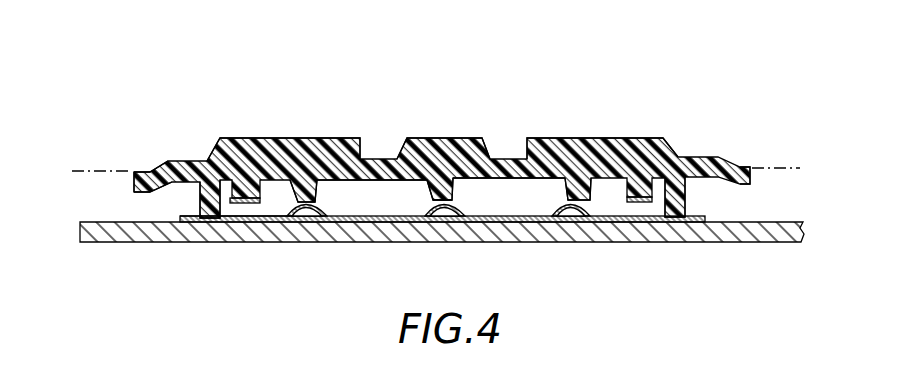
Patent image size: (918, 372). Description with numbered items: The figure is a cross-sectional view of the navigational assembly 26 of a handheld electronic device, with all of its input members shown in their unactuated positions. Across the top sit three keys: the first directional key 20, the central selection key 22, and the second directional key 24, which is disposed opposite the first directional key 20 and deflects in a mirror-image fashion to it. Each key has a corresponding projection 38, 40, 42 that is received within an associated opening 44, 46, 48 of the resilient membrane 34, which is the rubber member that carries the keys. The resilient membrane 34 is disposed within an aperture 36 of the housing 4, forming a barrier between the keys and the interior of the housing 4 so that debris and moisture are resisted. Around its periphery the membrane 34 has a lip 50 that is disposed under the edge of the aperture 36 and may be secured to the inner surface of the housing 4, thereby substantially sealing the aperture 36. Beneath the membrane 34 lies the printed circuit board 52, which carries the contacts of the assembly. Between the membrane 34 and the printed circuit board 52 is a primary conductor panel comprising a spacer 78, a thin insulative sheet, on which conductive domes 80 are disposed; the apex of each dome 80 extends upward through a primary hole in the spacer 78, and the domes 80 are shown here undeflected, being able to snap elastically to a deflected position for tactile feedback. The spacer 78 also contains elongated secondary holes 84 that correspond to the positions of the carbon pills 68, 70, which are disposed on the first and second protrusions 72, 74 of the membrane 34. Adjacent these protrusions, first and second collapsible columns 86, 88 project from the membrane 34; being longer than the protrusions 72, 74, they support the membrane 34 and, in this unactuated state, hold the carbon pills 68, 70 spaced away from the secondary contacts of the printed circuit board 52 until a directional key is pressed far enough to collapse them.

The housing 4 is at (82, 170).
The first directional key 20 is at (283, 138).
The central selection key 22 is at (422, 138).
The second directional key 24 is at (588, 138).
The navigational assembly 26 is at (366, 74).
The resilient membrane 34 is at (180, 161).
The aperture 36 is at (151, 172).
The projection 38 is at (318, 190).
The projection 40 is at (450, 190).
The projection 42 is at (566, 188).
The opening 44 is at (331, 160).
The opening 46 is at (455, 165).
The opening 48 is at (560, 162).
The lip 50 is at (135, 181).
The printed circuit board 52 is at (290, 232).
The carbon pill 68 is at (256, 201).
The carbon pill 70 is at (626, 200).
The first protrusion 72 is at (233, 162).
The second protrusion 74 is at (641, 178).
The spacer 78 is at (205, 222).
The conductive dome 80 is at (306, 212).
The secondary hole 84 is at (245, 222).
The first collapsible column 86 is at (200, 190).
The second collapsible column 88 is at (690, 190).